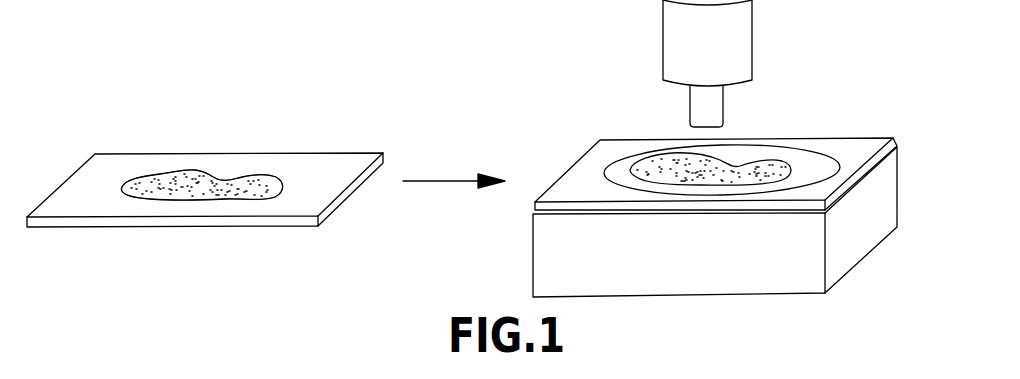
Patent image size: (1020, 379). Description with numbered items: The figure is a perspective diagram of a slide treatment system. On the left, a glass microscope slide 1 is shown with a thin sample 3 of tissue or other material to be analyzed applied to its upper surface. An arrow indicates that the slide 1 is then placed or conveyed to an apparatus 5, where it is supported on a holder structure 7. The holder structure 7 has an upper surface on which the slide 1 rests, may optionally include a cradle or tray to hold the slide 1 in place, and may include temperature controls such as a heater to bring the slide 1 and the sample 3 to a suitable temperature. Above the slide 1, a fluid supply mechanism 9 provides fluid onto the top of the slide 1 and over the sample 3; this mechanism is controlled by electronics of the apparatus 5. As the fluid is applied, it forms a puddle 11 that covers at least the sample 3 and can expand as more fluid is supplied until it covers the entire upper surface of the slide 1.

The glass microscope slide 1 is at (307, 162).
The sample 3 is at (177, 180).
The apparatus 5 is at (682, 148).
The holder structure 7 is at (550, 248).
The fluid supply mechanism 9 is at (735, 33).
The puddle 11 is at (807, 161).